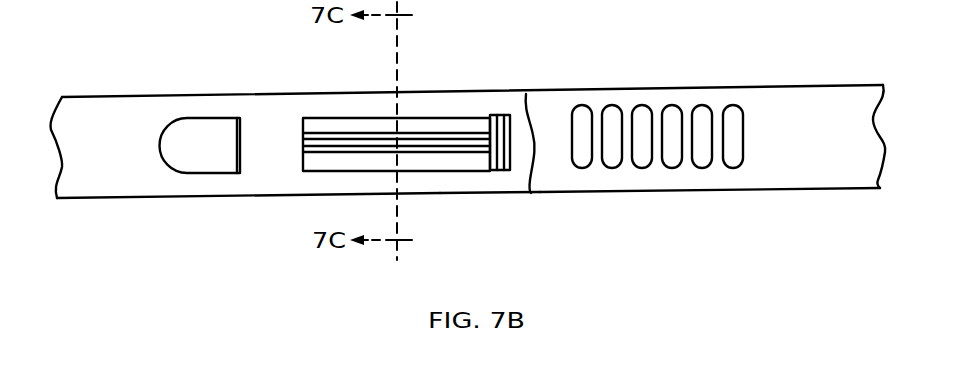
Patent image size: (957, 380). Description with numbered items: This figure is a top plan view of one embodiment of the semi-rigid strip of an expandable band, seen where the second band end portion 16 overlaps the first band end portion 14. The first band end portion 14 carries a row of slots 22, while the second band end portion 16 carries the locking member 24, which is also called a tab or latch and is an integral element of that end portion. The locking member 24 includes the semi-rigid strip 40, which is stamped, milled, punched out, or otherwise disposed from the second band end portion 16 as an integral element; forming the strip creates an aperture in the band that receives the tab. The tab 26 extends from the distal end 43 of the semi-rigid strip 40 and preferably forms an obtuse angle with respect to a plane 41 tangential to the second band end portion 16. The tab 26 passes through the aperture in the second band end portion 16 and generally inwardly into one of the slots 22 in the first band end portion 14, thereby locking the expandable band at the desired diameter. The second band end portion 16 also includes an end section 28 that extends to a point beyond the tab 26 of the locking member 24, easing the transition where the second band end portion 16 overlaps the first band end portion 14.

The first band end portion 14 is at (692, 53).
The second band end portion 16 is at (137, 50).
The slots 22 is at (613, 158).
The locking member 24 is at (331, 104).
The tab 26 is at (526, 94).
The end section 28 is at (496, 208).
The semi-rigid strip 40 is at (323, 118).
The plane 41 is at (340, 152).
The distal end 43 is at (490, 122).